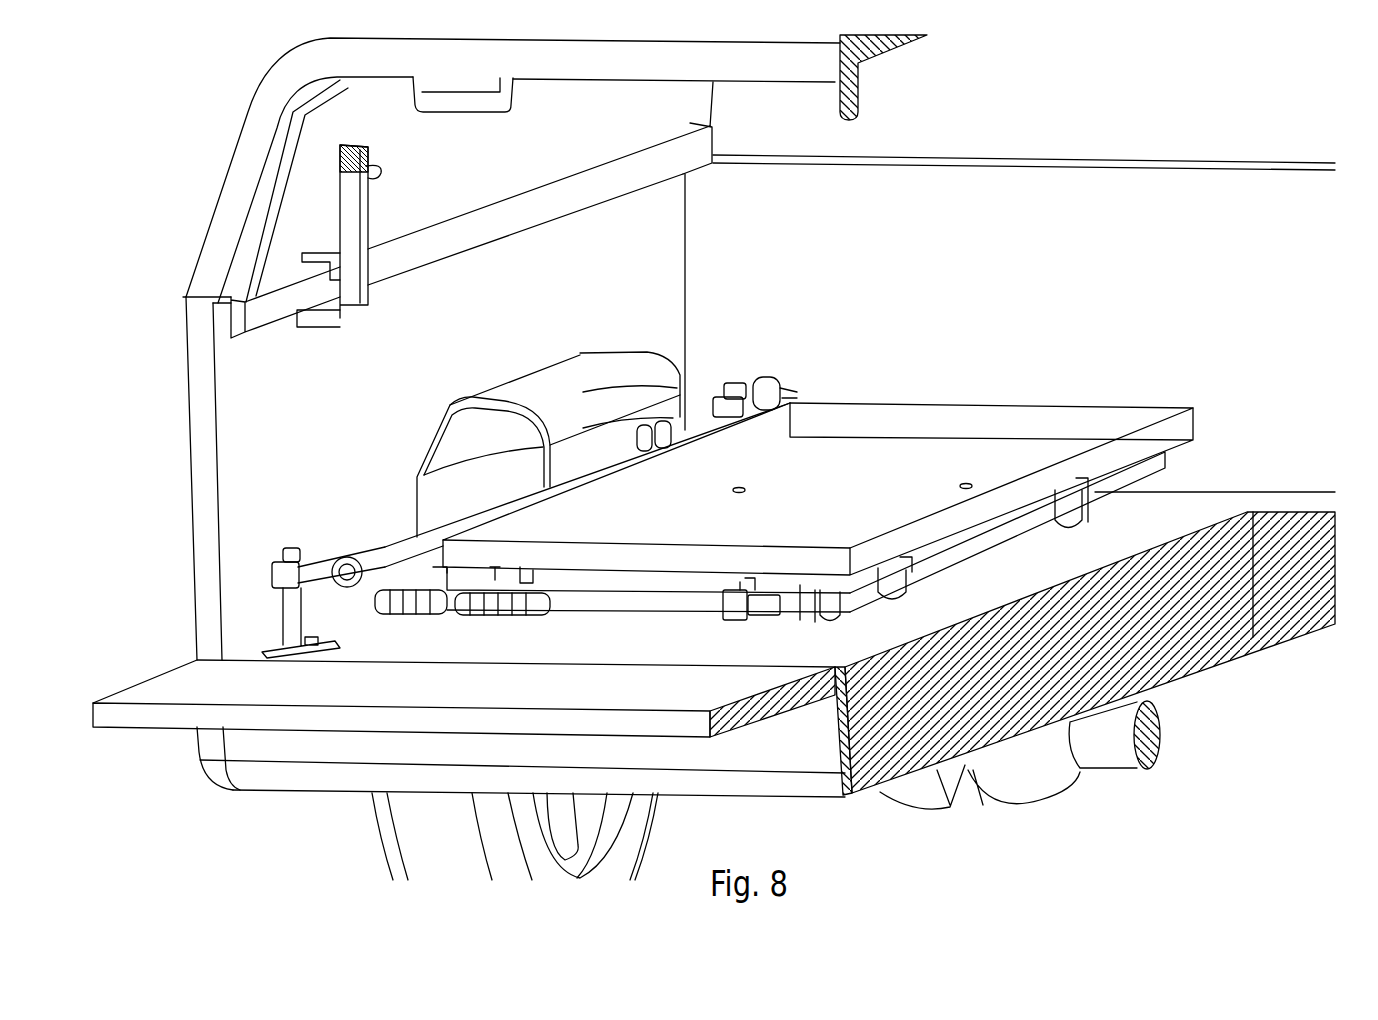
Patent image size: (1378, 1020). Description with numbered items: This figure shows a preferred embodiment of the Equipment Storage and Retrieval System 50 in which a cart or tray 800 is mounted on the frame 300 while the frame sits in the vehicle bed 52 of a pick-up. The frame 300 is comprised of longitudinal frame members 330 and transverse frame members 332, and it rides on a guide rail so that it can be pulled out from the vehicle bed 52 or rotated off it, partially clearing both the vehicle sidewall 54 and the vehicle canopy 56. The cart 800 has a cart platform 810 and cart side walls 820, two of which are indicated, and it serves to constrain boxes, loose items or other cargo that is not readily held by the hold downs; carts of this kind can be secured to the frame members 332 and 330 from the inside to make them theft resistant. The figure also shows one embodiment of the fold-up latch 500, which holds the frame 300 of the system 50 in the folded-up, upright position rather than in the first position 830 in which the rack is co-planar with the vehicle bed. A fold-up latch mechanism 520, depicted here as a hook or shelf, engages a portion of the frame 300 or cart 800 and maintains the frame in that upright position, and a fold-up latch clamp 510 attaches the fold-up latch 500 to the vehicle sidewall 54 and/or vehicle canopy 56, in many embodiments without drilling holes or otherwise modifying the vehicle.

The Equipment Storage and Retrieval System 50 is at (1014, 231).
The vehicle bed 52 is at (1153, 535).
The vehicle sidewall 54 is at (368, 442).
The vehicle canopy 56 is at (477, 83).
The fold-up latch 500 is at (413, 300).
The fold-up latch clamp 510 is at (305, 327).
The fold-up latch mechanism 520 is at (382, 170).
The cart 800 is at (777, 507).
The cart platform 810 is at (838, 505).
The cart side walls 820 is at (1167, 427).
The first position 830 is at (640, 600).
The frame 300 is at (668, 646).
The longitudinal frame members 330 is at (384, 592).
The transverse frame members 332 is at (587, 600).